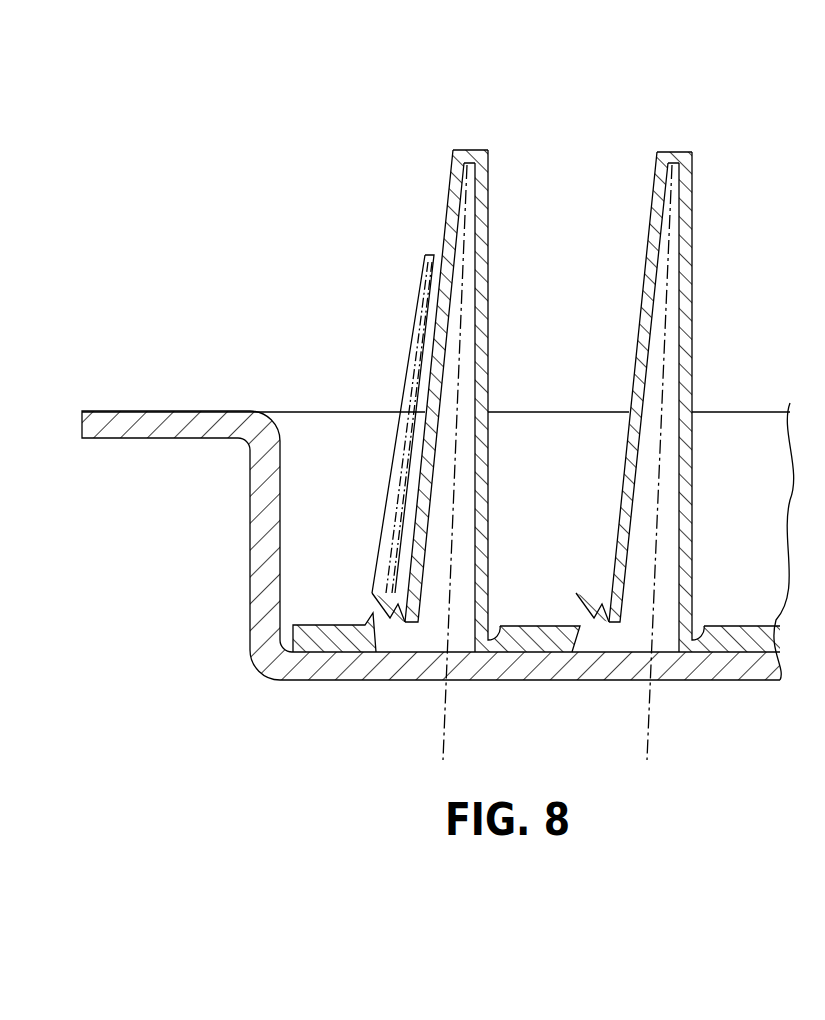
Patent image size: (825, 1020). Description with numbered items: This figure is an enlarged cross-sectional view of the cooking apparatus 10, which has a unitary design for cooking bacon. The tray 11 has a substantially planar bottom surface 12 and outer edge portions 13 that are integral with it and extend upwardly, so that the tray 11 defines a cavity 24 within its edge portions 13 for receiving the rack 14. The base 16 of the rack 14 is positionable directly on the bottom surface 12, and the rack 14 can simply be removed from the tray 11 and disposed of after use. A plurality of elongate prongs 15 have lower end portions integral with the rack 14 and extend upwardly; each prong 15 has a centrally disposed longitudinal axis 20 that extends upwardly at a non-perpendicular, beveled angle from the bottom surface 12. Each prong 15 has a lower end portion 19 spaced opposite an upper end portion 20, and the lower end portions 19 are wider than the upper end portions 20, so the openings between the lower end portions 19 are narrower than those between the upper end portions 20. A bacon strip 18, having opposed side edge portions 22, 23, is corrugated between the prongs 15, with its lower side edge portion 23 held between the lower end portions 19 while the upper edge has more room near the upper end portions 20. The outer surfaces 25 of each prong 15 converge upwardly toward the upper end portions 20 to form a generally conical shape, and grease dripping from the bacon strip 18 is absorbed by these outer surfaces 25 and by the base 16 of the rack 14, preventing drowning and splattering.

The cooking apparatus 10 is at (298, 182).
The tray 11 is at (143, 410).
The bottom surface 12 is at (535, 680).
The edge portions 13 is at (249, 505).
The rack 14 is at (615, 315).
The prongs 15 is at (430, 330).
The base 16 is at (527, 626).
The bacon strip 18 is at (418, 374).
The lower end portion 19 is at (440, 718).
The upper end portion 20 is at (473, 150).
The side edge portion 22 is at (425, 270).
The lower side edge portion 23 is at (383, 591).
The cavity 24 is at (300, 440).
The outer surfaces 25 is at (472, 468).